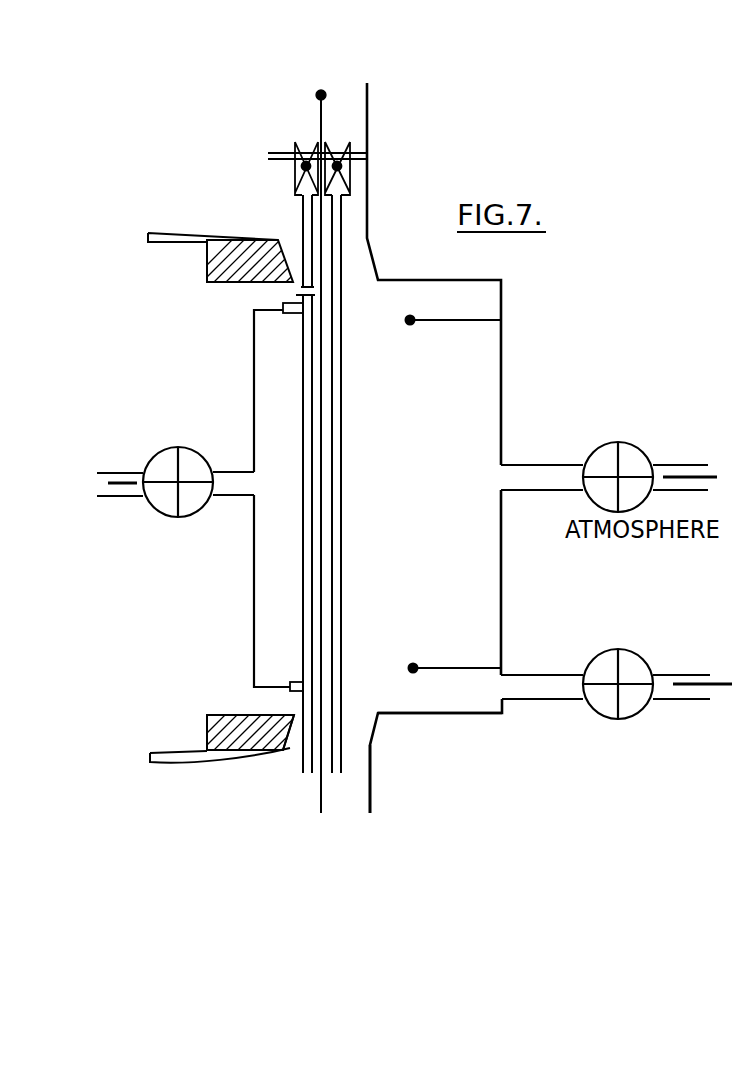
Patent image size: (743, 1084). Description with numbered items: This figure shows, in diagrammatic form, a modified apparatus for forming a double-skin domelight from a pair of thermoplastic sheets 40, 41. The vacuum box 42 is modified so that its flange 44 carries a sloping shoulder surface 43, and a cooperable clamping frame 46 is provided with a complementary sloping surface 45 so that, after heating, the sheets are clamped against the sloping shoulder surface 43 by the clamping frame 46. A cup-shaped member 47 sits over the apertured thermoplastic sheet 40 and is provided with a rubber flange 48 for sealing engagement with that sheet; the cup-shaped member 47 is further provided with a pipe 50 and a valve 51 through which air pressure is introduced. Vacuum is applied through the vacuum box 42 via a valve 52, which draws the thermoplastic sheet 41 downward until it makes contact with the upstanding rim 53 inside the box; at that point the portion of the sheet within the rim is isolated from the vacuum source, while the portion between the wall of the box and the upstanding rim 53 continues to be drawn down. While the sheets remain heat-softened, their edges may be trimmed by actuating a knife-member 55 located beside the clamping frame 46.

The thermoplastic sheet 40 is at (303, 375).
The thermoplastic sheet 41 is at (341, 363).
The vacuum box 42 is at (465, 714).
The sloping shoulder surface 43 is at (378, 730).
The flange 44 is at (371, 775).
The complementary sloping surface 45 is at (290, 738).
The clamping frame 46 is at (207, 735).
The cup-shaped member 47 is at (254, 602).
The rubber flange 48 is at (290, 688).
The pipe 50 is at (245, 487).
The valve 51 is at (162, 461).
The valve 52 is at (607, 660).
The upstanding rim 53 is at (420, 661).
The knife-member 55 is at (173, 758).